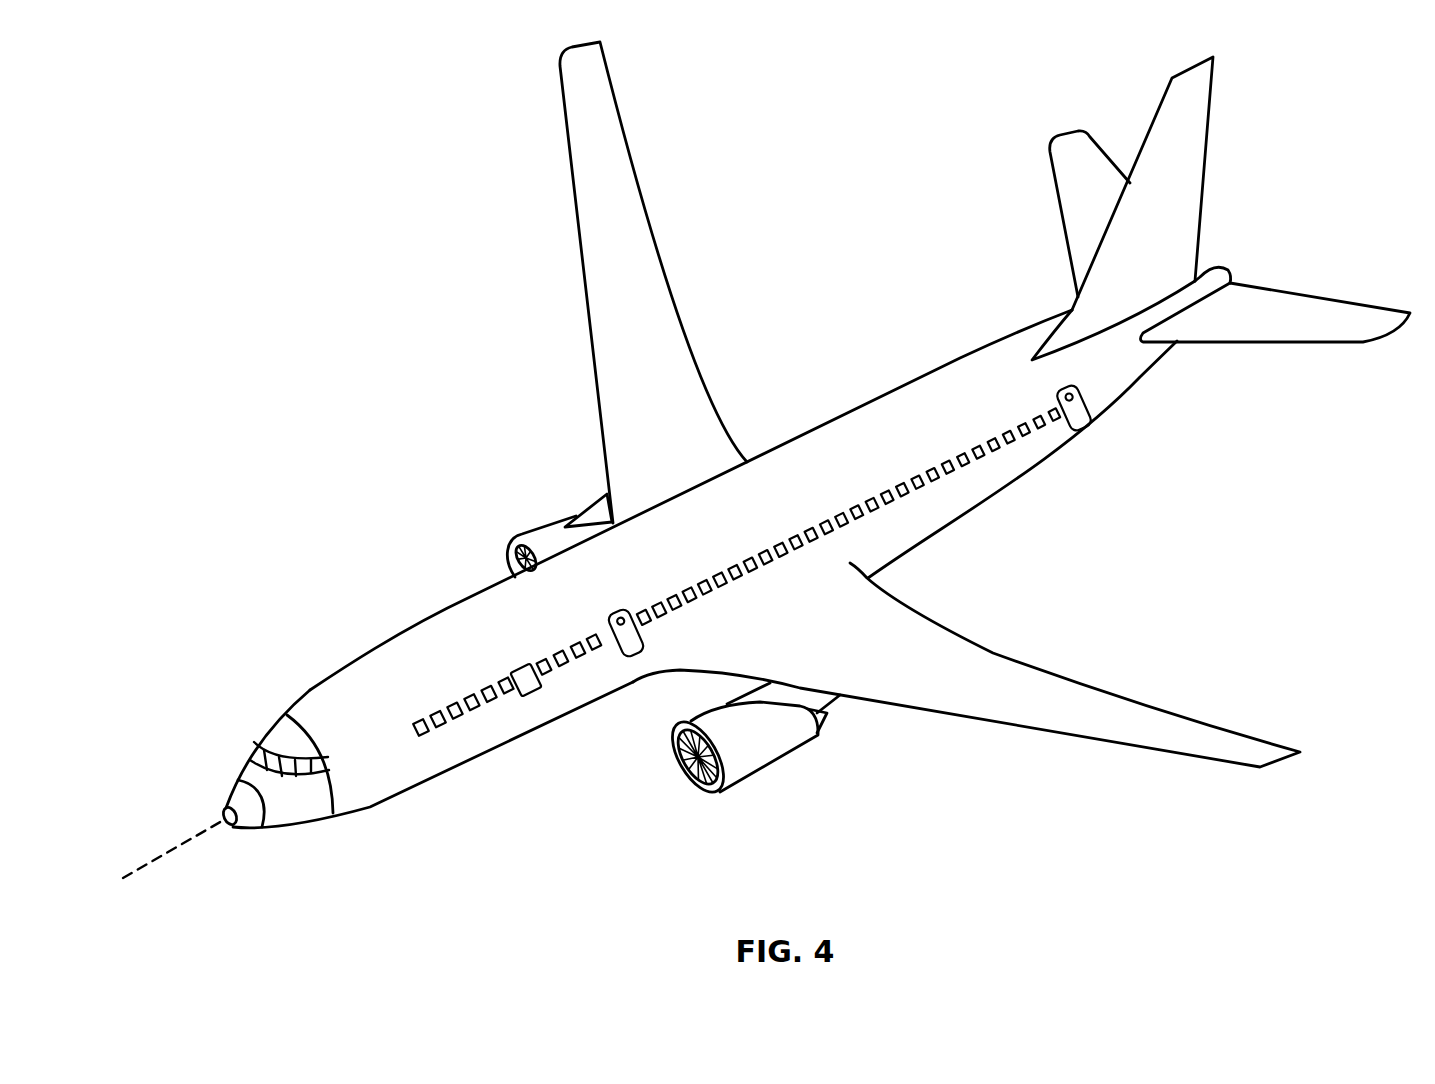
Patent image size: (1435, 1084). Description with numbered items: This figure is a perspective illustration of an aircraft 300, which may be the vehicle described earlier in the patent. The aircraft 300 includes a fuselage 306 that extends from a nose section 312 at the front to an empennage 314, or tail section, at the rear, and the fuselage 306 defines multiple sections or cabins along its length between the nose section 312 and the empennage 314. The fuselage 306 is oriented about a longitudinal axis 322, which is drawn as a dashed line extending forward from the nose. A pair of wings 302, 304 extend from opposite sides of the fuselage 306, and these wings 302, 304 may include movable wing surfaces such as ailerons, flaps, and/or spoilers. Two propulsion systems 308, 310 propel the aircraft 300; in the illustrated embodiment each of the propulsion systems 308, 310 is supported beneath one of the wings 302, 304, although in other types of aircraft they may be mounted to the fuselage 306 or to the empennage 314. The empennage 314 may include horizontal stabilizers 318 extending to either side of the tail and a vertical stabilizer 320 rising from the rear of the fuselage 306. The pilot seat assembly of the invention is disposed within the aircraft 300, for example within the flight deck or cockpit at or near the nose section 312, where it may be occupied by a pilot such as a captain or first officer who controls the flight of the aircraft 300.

The aircraft 300 is at (316, 424).
The wing 302 is at (613, 97).
The wing 304 is at (1110, 690).
The fuselage 306 is at (904, 390).
The propulsion system 308 is at (530, 528).
The propulsion system 310 is at (777, 766).
The nose section 312 is at (296, 648).
The empennage 314 is at (1290, 87).
The horizontal stabilizer 318 is at (1063, 137).
The vertical stabilizer 320 is at (1163, 102).
The longitudinal axis 322 is at (185, 842).